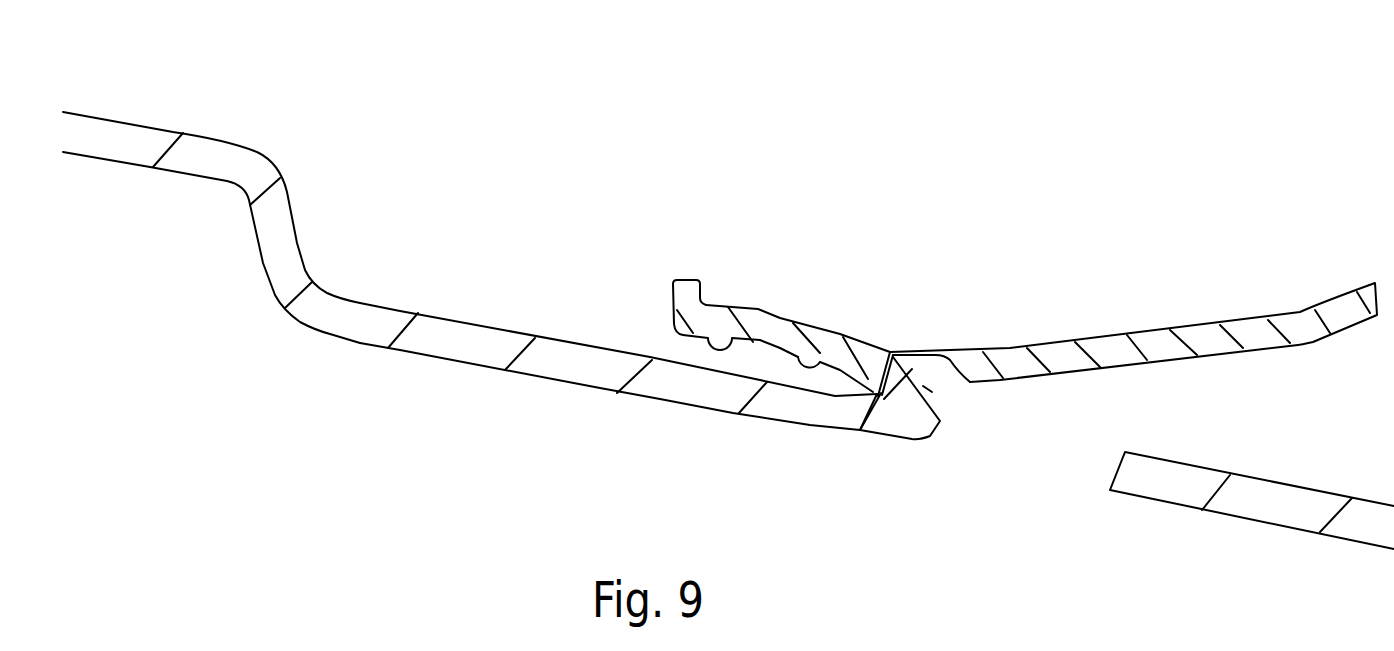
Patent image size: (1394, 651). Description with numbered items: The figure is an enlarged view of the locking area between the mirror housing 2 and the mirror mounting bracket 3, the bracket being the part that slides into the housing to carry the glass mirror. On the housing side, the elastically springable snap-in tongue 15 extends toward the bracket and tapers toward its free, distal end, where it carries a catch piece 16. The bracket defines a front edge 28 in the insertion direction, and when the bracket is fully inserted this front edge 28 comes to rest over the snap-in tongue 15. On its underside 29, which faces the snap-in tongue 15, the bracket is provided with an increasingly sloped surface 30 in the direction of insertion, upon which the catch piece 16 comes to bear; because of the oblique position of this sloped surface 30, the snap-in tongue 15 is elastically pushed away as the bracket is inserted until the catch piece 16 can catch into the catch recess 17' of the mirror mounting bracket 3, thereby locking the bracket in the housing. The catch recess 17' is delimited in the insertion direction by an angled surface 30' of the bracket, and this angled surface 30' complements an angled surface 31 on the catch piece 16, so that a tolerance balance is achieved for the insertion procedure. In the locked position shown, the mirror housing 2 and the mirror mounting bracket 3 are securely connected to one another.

The mirror housing 2 is at (207, 132).
The mirror mounting bracket 3 is at (1150, 340).
The snap-in tongue 15 is at (465, 335).
The catch piece 16 is at (896, 378).
The catch recess 17' is at (951, 296).
The front edge 28 is at (675, 310).
The underside 29 is at (730, 350).
The sloped surface 30 is at (840, 305).
The angled surface 30' is at (910, 325).
The angled surface 31 is at (872, 394).